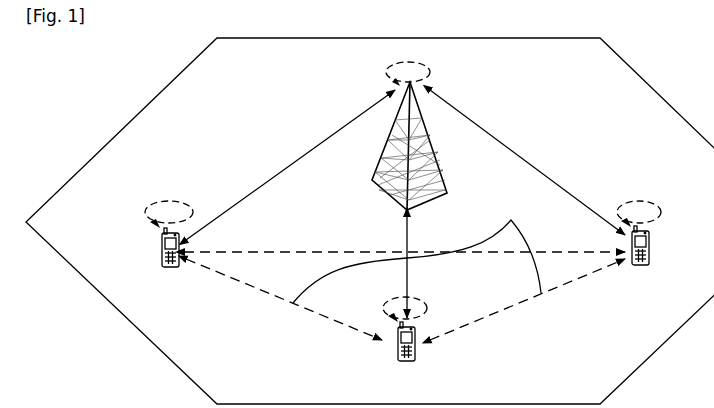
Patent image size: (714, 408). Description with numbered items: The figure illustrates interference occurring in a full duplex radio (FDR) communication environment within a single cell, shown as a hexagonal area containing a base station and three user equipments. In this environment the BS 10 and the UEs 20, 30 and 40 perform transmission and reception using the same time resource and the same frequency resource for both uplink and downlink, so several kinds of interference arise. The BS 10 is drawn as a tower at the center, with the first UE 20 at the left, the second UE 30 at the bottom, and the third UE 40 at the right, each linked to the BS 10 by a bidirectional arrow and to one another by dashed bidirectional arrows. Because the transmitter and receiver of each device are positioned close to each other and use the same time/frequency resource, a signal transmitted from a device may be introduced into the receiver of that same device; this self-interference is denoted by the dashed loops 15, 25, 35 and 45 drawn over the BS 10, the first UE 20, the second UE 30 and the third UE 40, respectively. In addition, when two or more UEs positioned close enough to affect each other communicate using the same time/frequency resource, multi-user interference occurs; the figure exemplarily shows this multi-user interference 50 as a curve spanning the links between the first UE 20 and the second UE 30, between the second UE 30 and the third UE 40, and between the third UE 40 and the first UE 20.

The base station 10 is at (433, 160).
The self-interference of the base station 15 is at (430, 74).
The UE 0 20 is at (162, 247).
The self-interference of UE 0 25 is at (172, 201).
The UE 1 30 is at (398, 349).
The self-interference of UE 1 35 is at (424, 299).
The UE 2 40 is at (650, 248).
The self-interference of UE 2 45 is at (640, 201).
The multi-user interference 50 is at (507, 250).